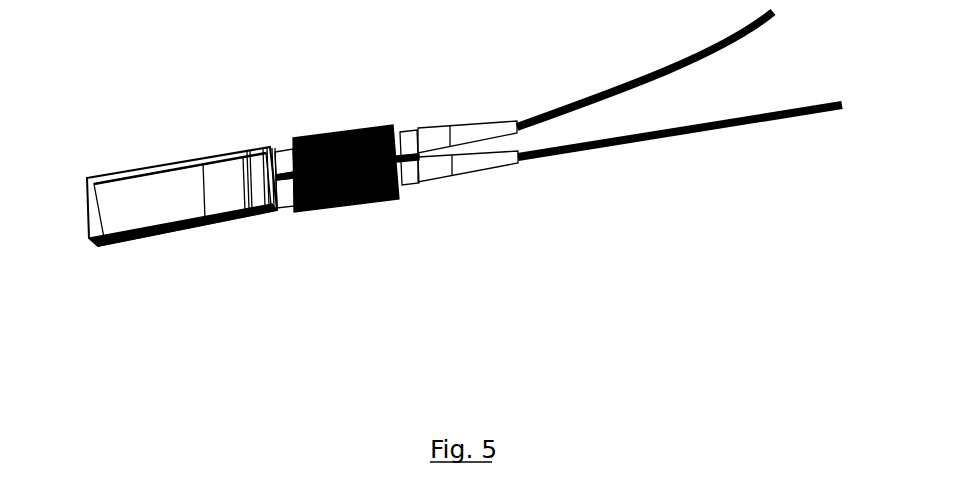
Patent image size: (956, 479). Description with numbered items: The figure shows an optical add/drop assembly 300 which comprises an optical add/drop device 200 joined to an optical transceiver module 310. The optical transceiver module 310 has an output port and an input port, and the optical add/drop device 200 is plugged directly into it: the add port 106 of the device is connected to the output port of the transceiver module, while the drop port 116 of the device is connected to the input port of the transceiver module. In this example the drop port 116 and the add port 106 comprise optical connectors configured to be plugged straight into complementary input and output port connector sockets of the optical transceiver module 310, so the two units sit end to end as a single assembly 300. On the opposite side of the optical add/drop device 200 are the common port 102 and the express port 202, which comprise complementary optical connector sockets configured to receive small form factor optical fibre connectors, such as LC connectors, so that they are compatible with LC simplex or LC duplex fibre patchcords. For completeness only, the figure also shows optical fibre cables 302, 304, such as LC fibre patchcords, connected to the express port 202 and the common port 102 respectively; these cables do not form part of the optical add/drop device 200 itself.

The optical add/drop assembly 300 is at (200, 89).
The optical transceiver module 310 is at (150, 203).
The drop port 116 is at (283, 153).
The add port 106 is at (285, 192).
The optical add/drop device 200 is at (343, 147).
The express port 202 is at (410, 137).
The common port 102 is at (412, 170).
The optical fibre cable 302 is at (550, 117).
The optical fibre cable 304 is at (567, 153).